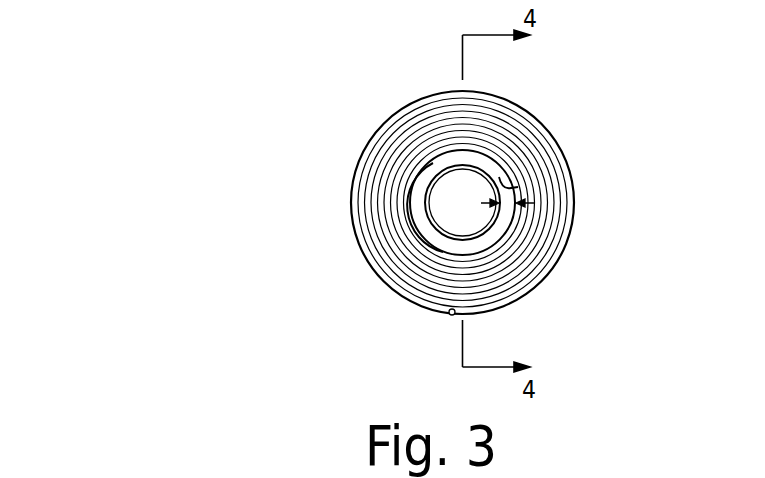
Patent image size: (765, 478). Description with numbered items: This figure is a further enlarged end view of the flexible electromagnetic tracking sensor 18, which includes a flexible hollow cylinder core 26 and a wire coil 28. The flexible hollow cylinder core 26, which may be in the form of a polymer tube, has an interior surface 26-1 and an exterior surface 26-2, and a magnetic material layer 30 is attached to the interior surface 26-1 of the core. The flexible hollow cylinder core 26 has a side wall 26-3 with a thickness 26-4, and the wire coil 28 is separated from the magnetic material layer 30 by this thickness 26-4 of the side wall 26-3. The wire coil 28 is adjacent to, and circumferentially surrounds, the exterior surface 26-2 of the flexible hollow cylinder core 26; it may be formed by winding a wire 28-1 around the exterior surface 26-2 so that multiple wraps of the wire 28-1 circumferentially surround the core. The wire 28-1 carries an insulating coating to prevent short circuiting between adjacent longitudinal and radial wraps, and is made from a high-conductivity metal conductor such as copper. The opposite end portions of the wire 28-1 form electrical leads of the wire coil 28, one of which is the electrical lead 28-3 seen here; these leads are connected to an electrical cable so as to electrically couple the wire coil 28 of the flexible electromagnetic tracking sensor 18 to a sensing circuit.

The flexible electromagnetic tracking sensor 18 is at (106, 81).
The flexible hollow cylinder core 26 is at (411, 165).
The interior surface 26-1 is at (474, 167).
The exterior surface 26-2 is at (498, 168).
The side wall 26-3 is at (514, 188).
The thickness 26-4 is at (533, 206).
The wire coil 28 is at (334, 214).
The wire 28-1 is at (388, 282).
The electrical lead 28-3 is at (452, 316).
The magnetic material layer 30 is at (483, 219).